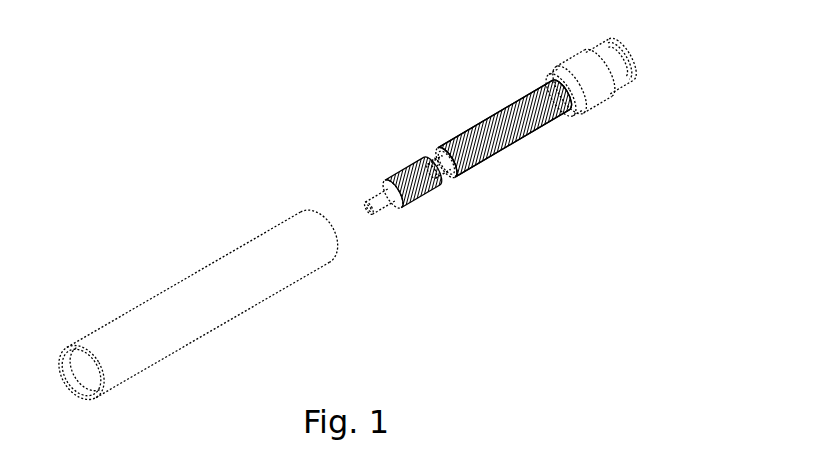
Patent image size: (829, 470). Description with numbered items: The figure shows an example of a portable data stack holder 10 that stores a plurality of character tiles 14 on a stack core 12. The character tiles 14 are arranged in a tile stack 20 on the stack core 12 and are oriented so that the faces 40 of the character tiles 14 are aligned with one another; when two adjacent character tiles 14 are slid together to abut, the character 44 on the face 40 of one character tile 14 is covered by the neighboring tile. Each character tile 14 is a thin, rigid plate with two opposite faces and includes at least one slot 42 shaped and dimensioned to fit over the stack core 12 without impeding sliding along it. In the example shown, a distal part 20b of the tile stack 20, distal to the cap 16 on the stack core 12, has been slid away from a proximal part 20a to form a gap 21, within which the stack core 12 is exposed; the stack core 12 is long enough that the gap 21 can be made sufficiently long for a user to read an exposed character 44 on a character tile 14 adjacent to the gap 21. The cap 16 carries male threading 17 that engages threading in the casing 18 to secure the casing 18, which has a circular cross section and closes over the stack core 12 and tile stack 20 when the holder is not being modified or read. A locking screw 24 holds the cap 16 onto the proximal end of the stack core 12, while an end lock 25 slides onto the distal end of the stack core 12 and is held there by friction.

The portable data stack holder 10 is at (228, 105).
The stack core 12 is at (437, 163).
The character tiles 14 is at (485, 150).
The cap 16 is at (585, 52).
The male threading 17 is at (563, 68).
The casing 18 is at (167, 288).
The tile stack 20 is at (504, 135).
The proximal part 20a is at (569, 139).
The distal part 20b is at (419, 219).
The gap 21 is at (444, 201).
The locking screw 24 is at (622, 87).
The end lock 25 is at (383, 188).
The face 40 is at (447, 172).
The slot 42 is at (432, 153).
The character 44 is at (438, 148).